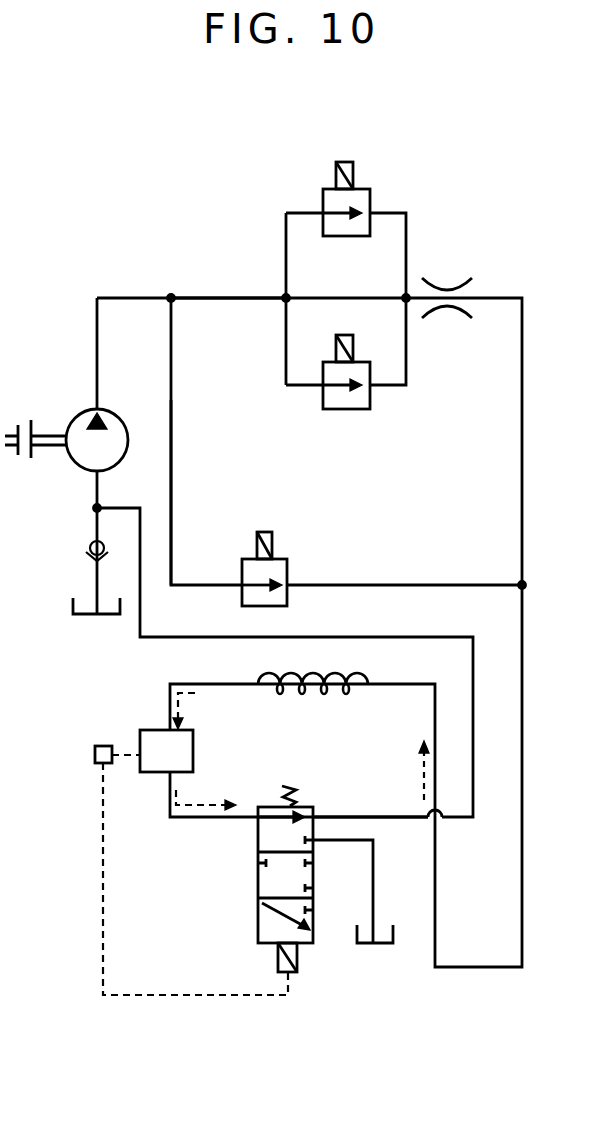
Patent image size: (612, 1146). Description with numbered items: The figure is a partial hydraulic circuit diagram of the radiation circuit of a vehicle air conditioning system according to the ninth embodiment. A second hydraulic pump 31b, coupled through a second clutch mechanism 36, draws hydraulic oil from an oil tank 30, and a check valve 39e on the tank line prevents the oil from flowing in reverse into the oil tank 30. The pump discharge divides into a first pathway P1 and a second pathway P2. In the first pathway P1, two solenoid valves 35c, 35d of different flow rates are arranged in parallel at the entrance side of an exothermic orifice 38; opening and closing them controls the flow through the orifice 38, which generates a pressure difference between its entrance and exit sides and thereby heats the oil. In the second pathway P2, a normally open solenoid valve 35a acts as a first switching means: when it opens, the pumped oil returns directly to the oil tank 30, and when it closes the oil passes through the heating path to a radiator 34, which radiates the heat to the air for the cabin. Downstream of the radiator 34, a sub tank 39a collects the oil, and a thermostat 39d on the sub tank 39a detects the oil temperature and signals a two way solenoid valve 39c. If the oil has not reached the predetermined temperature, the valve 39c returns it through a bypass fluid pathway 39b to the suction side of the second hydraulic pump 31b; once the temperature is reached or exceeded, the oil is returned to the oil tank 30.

The oil tank 30 is at (88, 616).
The second hydraulic pump 31b is at (70, 464).
The radiator 34 is at (316, 693).
The solenoid valve 35a is at (289, 576).
The solenoid valve 35c is at (372, 196).
The solenoid valve 35d is at (365, 410).
The second clutch mechanism 36 is at (26, 421).
The exothermic orifice 38 is at (445, 285).
The sub tank 39a is at (148, 730).
The bypass fluid pathway 39b is at (385, 816).
The two way solenoid valve 39c is at (310, 806).
The thermostat 39d is at (103, 745).
The check valve 39e is at (84, 553).
The first pathway P1 is at (212, 298).
The second pathway P2 is at (171, 497).